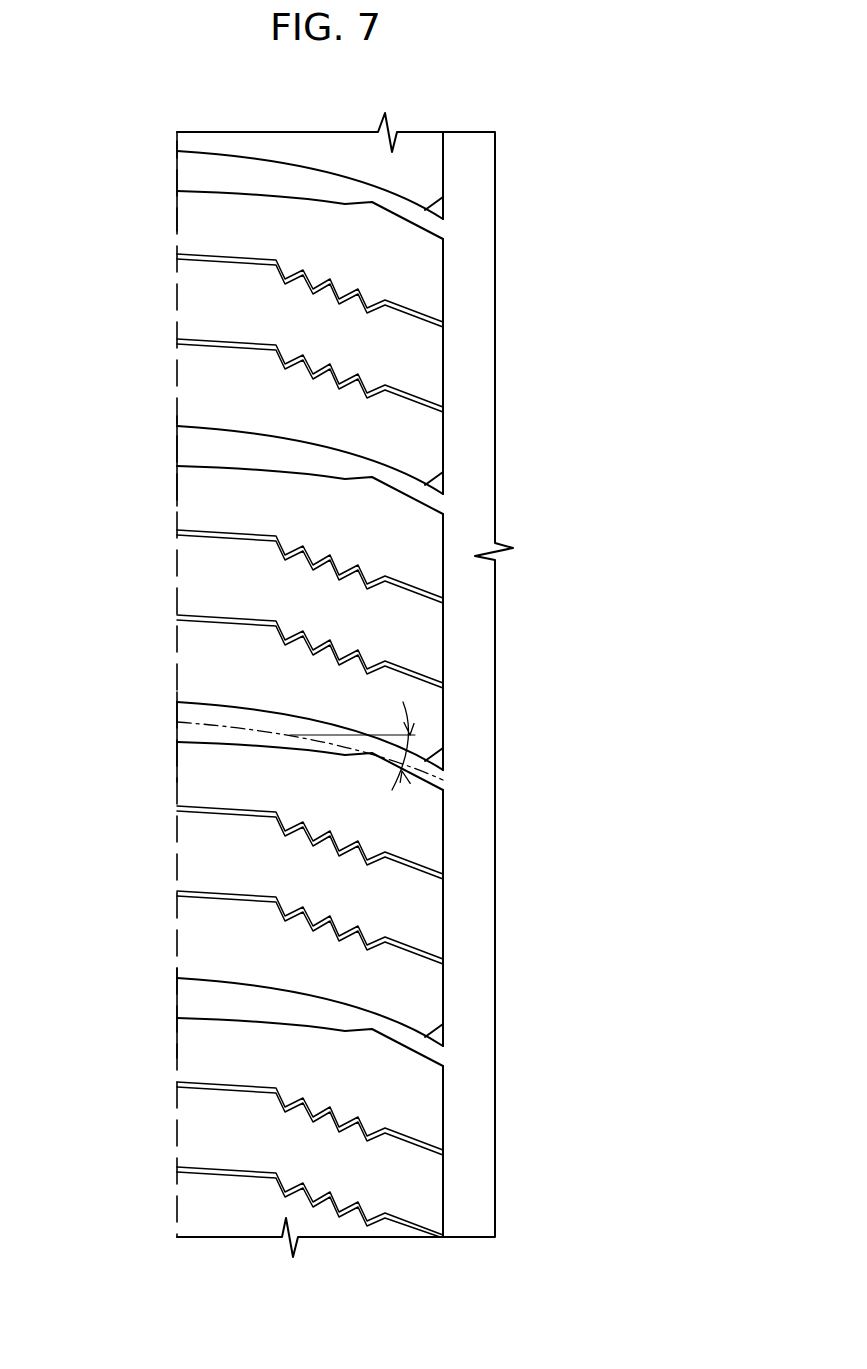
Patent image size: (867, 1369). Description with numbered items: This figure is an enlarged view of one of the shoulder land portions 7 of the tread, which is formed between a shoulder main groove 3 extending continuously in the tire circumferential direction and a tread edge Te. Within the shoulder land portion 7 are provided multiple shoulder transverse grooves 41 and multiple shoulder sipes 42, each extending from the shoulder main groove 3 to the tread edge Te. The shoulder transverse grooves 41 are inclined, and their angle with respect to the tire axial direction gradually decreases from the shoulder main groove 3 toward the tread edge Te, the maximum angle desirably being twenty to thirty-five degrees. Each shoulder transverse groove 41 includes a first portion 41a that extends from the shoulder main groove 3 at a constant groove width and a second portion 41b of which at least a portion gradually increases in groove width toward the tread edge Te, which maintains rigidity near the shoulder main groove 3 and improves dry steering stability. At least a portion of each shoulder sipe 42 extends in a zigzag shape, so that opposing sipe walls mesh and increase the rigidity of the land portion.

The shoulder land portion 7 is at (317, 225).
The shoulder main groove 3 is at (463, 158).
The tread edge Te is at (177, 202).
The shoulder transverse groove 41 is at (419, 608).
The first portion 41a is at (411, 472).
The second portion 41b is at (308, 447).
The shoulder sipe 42 is at (333, 283).